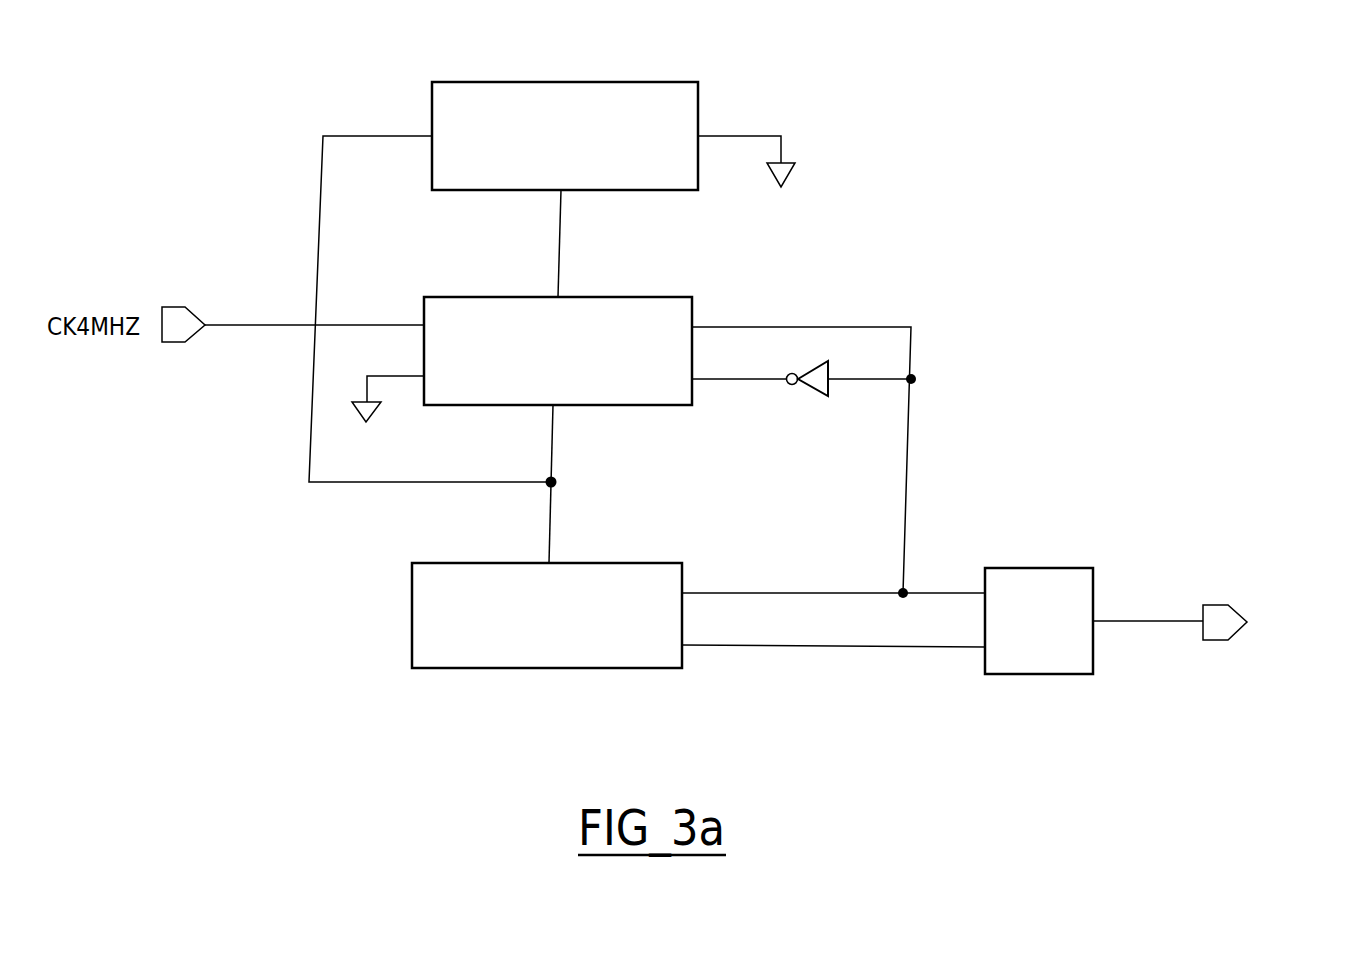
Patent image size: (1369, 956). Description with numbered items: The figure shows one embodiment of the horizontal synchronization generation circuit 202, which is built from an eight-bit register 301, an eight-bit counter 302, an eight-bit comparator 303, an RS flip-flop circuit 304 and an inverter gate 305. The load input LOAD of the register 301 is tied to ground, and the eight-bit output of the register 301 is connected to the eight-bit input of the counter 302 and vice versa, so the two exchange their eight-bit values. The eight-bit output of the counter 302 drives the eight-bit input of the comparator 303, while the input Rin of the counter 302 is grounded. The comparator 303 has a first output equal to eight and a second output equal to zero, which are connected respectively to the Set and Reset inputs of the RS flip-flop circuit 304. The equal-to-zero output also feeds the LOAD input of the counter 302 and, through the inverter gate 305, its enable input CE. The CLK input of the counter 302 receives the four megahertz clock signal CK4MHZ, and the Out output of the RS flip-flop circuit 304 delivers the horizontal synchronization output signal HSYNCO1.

The horizontal synchronization generation circuit 202 is at (222, 121).
The eight-bit register 301 is at (573, 82).
The eight-bit counter 302 is at (597, 297).
The eight-bit comparator 303 is at (592, 668).
The RS flip-flop circuit 304 is at (1043, 674).
The inverter gate 305 is at (808, 386).